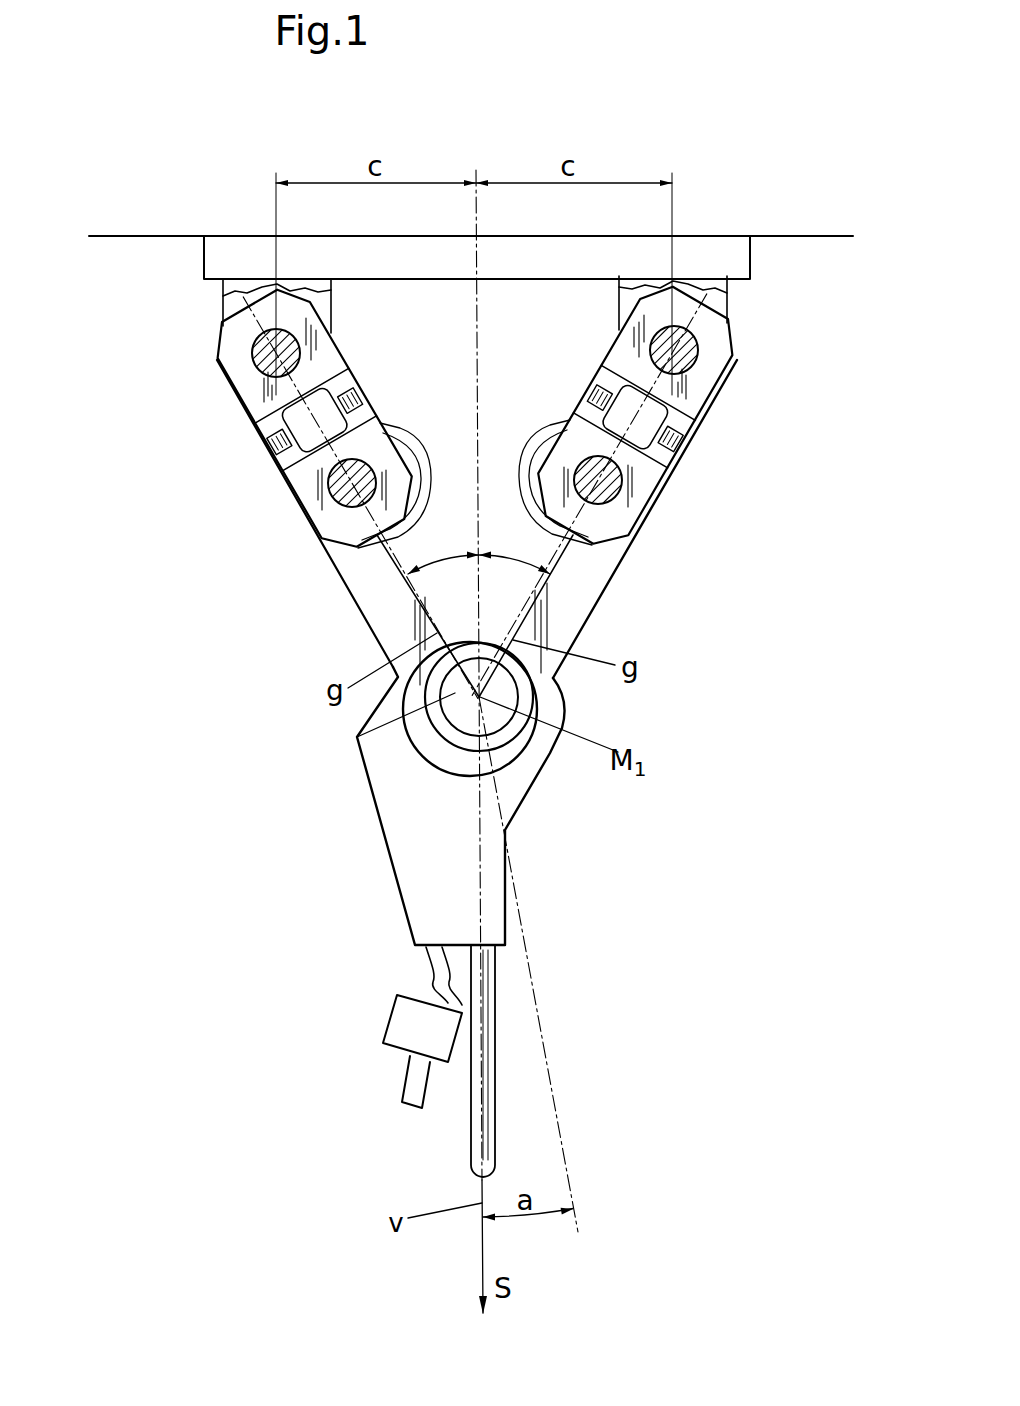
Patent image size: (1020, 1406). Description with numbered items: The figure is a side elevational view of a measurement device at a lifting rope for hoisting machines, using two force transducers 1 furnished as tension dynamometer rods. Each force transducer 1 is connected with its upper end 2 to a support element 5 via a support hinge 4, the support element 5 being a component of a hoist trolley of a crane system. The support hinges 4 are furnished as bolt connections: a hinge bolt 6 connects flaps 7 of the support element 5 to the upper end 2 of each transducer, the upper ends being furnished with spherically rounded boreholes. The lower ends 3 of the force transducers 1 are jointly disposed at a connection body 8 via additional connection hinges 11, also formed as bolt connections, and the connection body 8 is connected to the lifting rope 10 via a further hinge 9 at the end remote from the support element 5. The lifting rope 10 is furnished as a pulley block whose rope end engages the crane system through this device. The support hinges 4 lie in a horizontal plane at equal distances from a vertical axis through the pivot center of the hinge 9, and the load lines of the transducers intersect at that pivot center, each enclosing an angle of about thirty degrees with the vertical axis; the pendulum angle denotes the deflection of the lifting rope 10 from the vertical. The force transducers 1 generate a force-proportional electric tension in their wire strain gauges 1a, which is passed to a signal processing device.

The force transducer 1 is at (303, 480).
The wire strain gauge 1a is at (283, 462).
The upper end 2 is at (220, 338).
The lower end 3 is at (357, 548).
The support hinge 4 is at (230, 358).
The support element 5 is at (705, 248).
The hinge bolt 6 is at (245, 372).
The flap 7 is at (235, 283).
The connection body 8 is at (567, 607).
The hinge 9 is at (357, 737).
The lifting rope 10 is at (480, 1120).
The connection hinge 11 is at (322, 525).